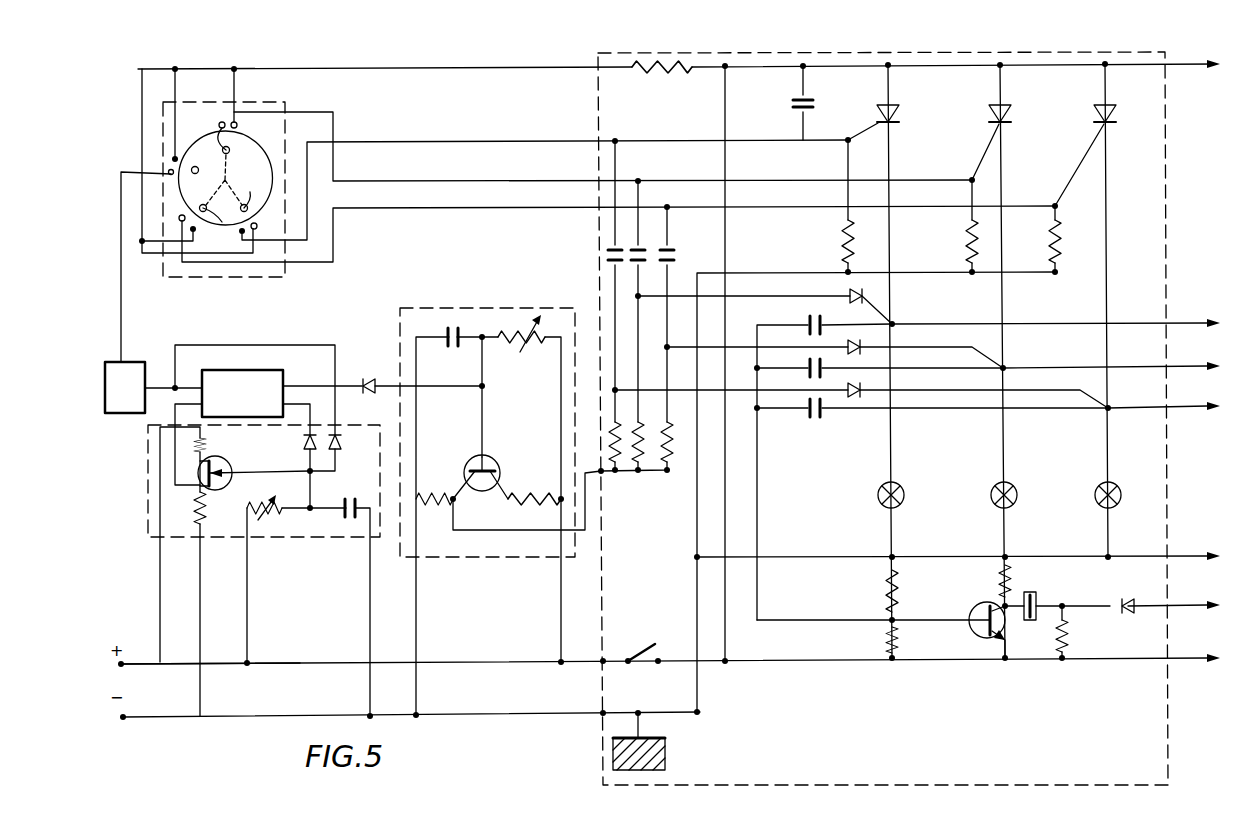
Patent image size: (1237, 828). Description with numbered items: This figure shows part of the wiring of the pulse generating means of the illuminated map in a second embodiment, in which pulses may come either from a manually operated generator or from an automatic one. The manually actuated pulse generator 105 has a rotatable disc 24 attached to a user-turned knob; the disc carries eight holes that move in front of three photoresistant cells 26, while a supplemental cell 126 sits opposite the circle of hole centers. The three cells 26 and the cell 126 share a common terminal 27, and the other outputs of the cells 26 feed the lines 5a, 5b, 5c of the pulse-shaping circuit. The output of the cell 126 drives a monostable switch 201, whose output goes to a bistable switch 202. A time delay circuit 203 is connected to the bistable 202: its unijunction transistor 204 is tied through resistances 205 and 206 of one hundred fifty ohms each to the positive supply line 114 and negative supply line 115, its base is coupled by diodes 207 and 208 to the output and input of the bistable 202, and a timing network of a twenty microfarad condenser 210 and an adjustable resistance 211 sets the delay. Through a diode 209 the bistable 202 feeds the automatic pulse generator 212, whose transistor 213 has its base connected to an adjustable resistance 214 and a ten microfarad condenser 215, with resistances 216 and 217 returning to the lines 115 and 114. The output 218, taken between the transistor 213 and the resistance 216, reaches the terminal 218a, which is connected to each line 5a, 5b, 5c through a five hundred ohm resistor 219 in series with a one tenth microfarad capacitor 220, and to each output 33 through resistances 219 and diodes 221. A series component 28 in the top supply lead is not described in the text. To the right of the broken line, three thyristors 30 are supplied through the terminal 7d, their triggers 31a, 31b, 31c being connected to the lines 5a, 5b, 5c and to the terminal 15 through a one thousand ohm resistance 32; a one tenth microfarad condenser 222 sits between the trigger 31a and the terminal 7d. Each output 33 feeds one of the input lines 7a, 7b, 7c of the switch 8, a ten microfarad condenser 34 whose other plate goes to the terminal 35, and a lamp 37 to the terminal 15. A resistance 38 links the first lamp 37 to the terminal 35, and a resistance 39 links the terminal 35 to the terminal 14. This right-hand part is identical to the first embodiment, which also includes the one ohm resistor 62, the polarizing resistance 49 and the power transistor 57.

The manually actuated pulse generator 105 is at (192, 173).
The common terminal 27 is at (234, 69).
The photoresistant cells 26 is at (222, 224).
The rotatable disc 24 is at (242, 144).
The supplemental cell 126 is at (198, 172).
The monostable switch 201 is at (125, 387).
The bistable switch 202 is at (271, 370).
The diode 209 is at (370, 375).
The resistance 205 is at (201, 444).
The diode 207 is at (303, 441).
The unijunction transistor 204 is at (231, 466).
The diode 208 is at (341, 441).
The condenser 210 is at (356, 498).
The resistance 206 is at (201, 520).
The adjustable resistance 211 is at (270, 516).
The time delay circuit 203 is at (319, 545).
The condenser 215 is at (462, 345).
The adjustable resistance 214 is at (540, 345).
The transistor 213 is at (470, 458).
The resistance 217 is at (538, 494).
The resistance 216 is at (438, 508).
The automatic pulse generator 212 is at (491, 565).
The output of the automatic pulse generator 218 is at (602, 566).
The terminal of the pulse shaping circuit 218a is at (604, 485).
The resistor 219 is at (673, 455).
The capacitor 220 is at (670, 248).
The line 5a is at (597, 141).
The line 5b is at (597, 181).
The line 5c is at (597, 207).
The resistor 28 is at (680, 72).
The terminal 7d is at (727, 70).
The condenser 222 is at (806, 97).
The thyristors 30 is at (1114, 113).
The trigger 31a is at (862, 134).
The trigger 31b is at (983, 157).
The trigger 31c is at (1080, 161).
The resistance 32 is at (1060, 244).
The diodes 221 is at (860, 386).
The outputs 33 is at (1109, 410).
The condenser 34 is at (806, 412).
The input line 7a is at (1056, 335).
The input line 7b is at (1111, 378).
The input line 7c is at (1164, 419).
The lamp 37 is at (1098, 505).
The resistance 38 is at (885, 574).
The terminal 35 is at (896, 618).
The resistance 39 is at (885, 634).
The resistor 62 is at (958, 568).
The polarizing resistance 49 is at (1112, 625).
The power transistor 57 is at (670, 667).
The terminal 14 is at (602, 656).
The terminal 15 is at (603, 712).
The positive supply line 114 is at (328, 662).
The negative supply line 115 is at (338, 716).
The switch 8 is at (1200, 79).